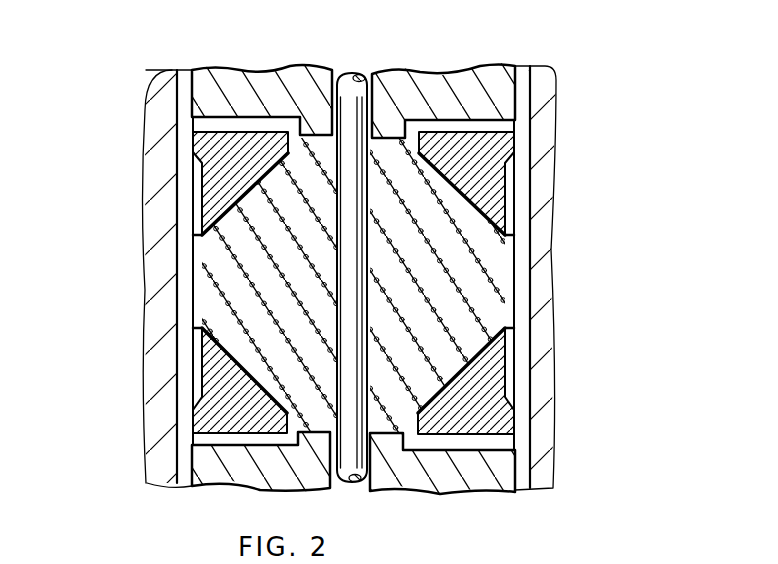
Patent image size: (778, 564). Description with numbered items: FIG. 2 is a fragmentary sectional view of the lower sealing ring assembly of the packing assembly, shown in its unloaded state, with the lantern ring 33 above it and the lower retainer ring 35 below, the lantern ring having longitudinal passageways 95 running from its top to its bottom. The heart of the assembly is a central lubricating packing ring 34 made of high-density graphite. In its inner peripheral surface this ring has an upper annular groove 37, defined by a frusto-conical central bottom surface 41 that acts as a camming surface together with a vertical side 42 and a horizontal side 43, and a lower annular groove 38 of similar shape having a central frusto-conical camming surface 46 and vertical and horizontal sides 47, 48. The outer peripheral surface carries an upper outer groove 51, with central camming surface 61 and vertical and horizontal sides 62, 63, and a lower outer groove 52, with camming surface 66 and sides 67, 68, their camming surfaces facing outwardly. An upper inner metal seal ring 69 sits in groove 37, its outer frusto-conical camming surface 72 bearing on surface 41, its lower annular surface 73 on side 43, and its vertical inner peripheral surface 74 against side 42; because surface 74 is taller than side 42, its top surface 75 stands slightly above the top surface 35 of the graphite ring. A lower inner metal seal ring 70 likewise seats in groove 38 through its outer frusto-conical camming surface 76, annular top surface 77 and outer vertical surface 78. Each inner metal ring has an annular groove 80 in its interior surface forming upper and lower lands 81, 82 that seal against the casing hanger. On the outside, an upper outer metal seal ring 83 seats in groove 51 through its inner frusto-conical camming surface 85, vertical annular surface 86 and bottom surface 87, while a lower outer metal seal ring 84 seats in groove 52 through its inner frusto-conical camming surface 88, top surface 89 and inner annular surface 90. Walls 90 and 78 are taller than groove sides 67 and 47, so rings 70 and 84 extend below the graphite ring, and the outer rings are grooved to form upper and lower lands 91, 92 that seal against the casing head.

The lantern ring 33 is at (482, 83).
The lubricating packing ring 34 is at (197, 292).
The lower retainer ring 35 is at (305, 125).
The upper annular groove 37 is at (540, 188).
The lower annular groove 38 is at (519, 484).
The central bottom surface 41 is at (535, 150).
The vertical side 42 is at (530, 92).
The horizontal side 43 is at (540, 240).
The central frusto-conical camming surface 46 is at (548, 395).
The vertical side 47 is at (460, 382).
The horizontal side 48 is at (517, 340).
The upper outer annular groove 51 is at (215, 160).
The lower outer annular groove 52 is at (193, 425).
The central camming surface 61 is at (203, 198).
The vertical side 62 is at (197, 95).
The horizontal side 63 is at (198, 228).
The central camming surface 66 is at (207, 382).
The vertical side 67 is at (215, 470).
The horizontal side 68 is at (197, 358).
The upper inner metal seal ring 69 is at (530, 135).
The lower inner metal seal ring 70 is at (522, 428).
The outer frusto-conical camming surface 72 is at (460, 225).
The lower annular surface 73 is at (502, 245).
The vertical inner peripheral surface 74 is at (407, 162).
The top surface 75 is at (428, 140).
The outer frusto-conical camming surface 76 is at (455, 370).
The annular top surface 77 is at (506, 337).
The outer vertical surface 78 is at (398, 412).
The annular groove 80 is at (487, 167).
The upper annular land 81 is at (527, 112).
The lower annular land 82 is at (507, 243).
The upper outer metal seal ring 83 is at (208, 148).
The lower outer metal seal ring 84 is at (222, 382).
The inner frusto-conical camming surface 85 is at (215, 228).
The vertical annular surface 86 is at (288, 158).
The bottom surface 87 is at (200, 245).
The inner frusto-conical camming surface 88 is at (273, 385).
The top surface 89 is at (205, 325).
The inner annular surface 90 is at (290, 412).
The upper land 91 is at (193, 140).
The lower land 92 is at (193, 226).
The longitudinal passageways 95 is at (372, 85).